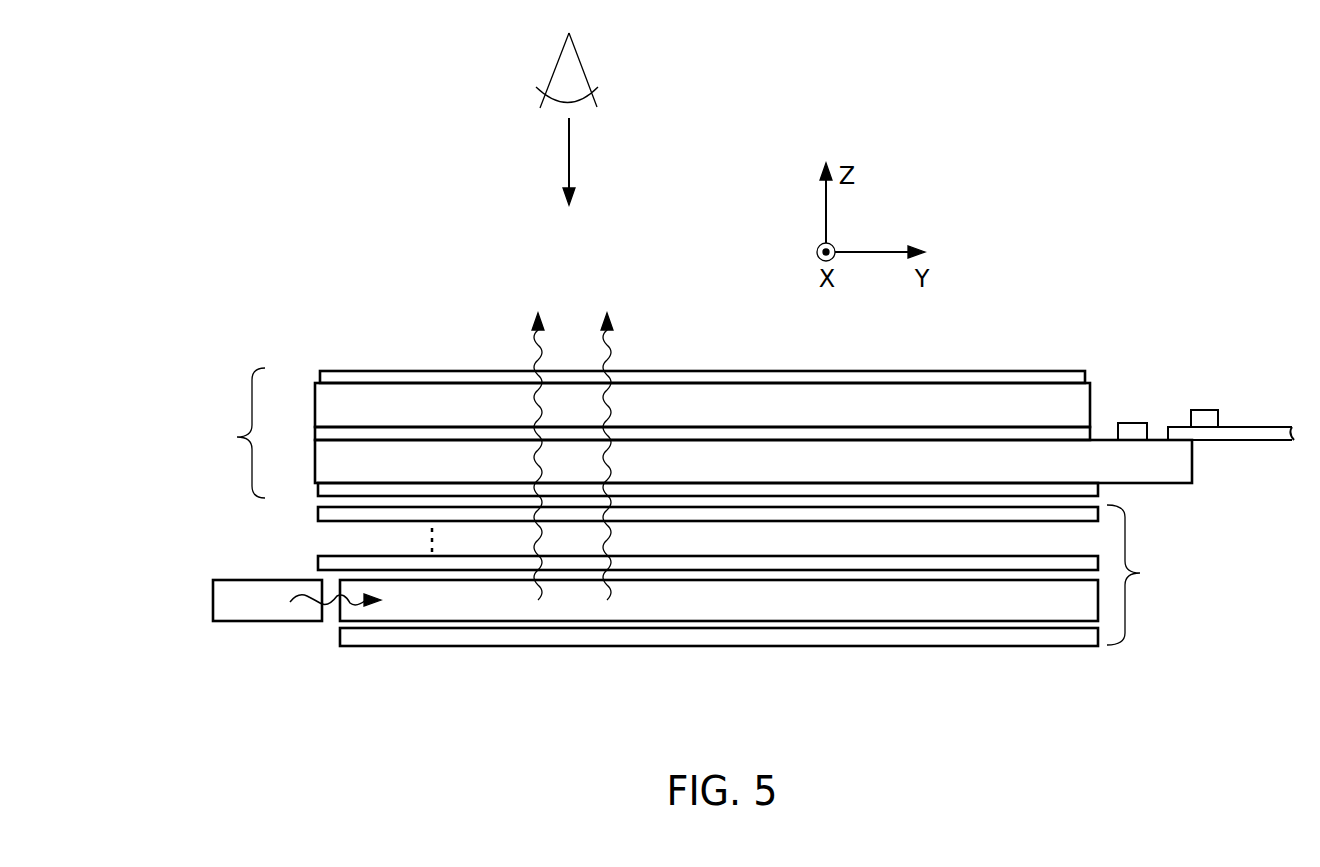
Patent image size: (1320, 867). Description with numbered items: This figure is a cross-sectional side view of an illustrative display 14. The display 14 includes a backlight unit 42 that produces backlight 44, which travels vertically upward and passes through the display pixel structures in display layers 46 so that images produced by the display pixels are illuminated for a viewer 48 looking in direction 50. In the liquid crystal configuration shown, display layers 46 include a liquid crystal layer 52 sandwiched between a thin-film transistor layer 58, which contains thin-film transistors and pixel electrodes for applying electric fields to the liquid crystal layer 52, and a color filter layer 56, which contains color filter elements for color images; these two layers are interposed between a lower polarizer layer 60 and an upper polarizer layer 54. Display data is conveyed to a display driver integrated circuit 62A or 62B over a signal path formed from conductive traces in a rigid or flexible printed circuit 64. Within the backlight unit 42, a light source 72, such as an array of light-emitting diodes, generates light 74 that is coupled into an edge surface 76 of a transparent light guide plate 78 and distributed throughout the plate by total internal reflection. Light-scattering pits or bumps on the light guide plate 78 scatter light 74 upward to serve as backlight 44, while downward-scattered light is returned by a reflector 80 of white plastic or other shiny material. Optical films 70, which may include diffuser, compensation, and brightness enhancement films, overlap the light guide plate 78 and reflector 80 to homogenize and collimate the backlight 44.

The display 14 is at (1119, 170).
The backlight unit 42 is at (1141, 575).
The backlight 44 is at (600, 350).
The display layers 46 is at (235, 433).
The viewer 48 is at (583, 67).
The direction 50 is at (569, 165).
The liquid crystal layer 52 is at (388, 432).
The upper polarizer layer 54 is at (340, 377).
The color filter layer 56 is at (313, 400).
The thin-film transistor layer 58 is at (314, 465).
The lower polarizer layer 60 is at (328, 490).
The display driver integrated circuit 62A is at (1130, 423).
The display driver integrated circuit 62B is at (1208, 410).
The printed circuit 64 is at (1245, 437).
The optical films 70 is at (333, 560).
The light source 72 is at (222, 610).
The light 74 is at (308, 597).
The edge surface 76 is at (339, 604).
The light guide plate 78 is at (427, 612).
The reflector 80 is at (510, 641).